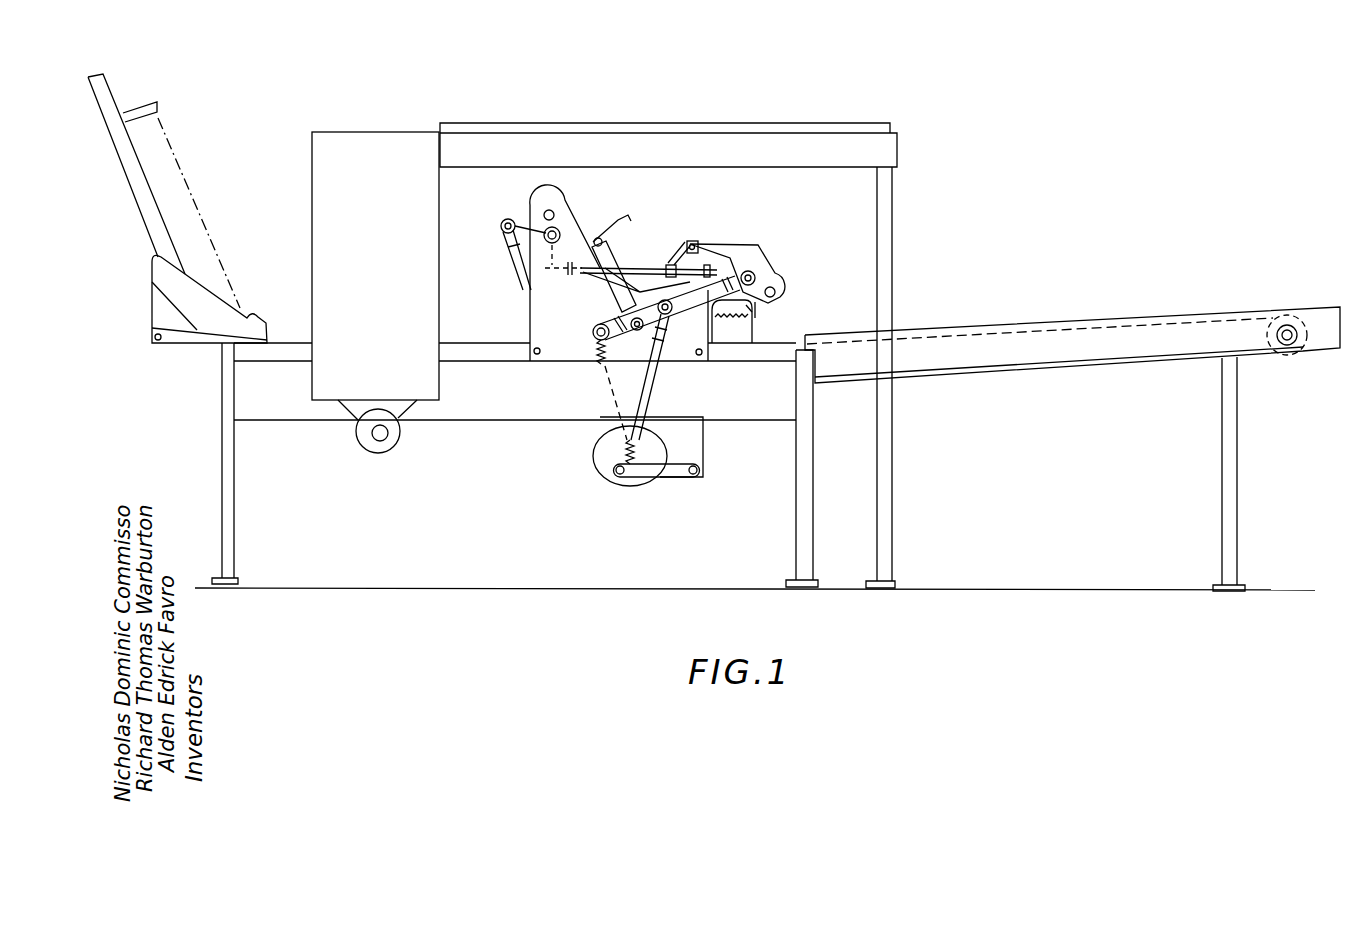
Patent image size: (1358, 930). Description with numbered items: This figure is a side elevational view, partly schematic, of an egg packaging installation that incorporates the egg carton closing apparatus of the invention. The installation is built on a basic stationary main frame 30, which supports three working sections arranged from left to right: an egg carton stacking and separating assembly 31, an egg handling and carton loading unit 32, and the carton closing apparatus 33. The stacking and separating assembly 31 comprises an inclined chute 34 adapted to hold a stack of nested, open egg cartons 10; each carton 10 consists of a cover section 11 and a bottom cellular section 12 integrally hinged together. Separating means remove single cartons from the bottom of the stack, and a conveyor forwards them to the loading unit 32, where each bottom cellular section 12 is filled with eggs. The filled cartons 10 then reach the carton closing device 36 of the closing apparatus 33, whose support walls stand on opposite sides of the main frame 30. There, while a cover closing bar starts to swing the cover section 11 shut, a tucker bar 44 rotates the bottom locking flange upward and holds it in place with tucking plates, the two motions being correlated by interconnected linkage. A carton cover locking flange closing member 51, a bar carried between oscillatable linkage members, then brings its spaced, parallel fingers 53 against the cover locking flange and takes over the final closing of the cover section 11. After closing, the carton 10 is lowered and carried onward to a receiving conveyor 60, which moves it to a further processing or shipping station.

The carton 10 is at (217, 215).
The cover section 11 is at (600, 297).
The bottom cellular section 12 is at (696, 292).
The main frame 30 is at (259, 433).
The egg carton stacking and separating assembly 31 is at (150, 280).
The egg handling and carton loading unit 32 is at (381, 126).
The carton closing apparatus 33 is at (575, 186).
The inclined chute 34 is at (132, 193).
The carton closing device 36 is at (530, 308).
The tucker bar 44 is at (753, 322).
The carton cover locking flange closing member 51 is at (612, 252).
The fingers 53 is at (614, 220).
The receiving conveyor 60 is at (1075, 320).